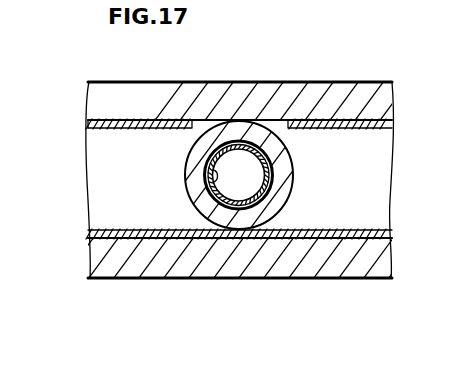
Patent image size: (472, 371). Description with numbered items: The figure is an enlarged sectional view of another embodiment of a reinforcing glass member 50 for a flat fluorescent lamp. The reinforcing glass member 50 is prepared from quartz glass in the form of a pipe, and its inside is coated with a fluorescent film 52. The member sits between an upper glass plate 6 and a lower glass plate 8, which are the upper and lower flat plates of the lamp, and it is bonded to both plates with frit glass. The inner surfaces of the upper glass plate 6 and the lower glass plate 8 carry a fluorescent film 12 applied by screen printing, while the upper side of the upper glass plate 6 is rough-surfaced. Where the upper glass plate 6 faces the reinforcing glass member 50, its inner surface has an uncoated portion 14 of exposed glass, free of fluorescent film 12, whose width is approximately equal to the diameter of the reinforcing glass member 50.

The upper glass plate 6 is at (122, 102).
The lower glass plate 8 is at (110, 266).
The fluorescent film 12 is at (90, 127).
The uncoated portion 14 is at (280, 123).
The reinforcing glass member 50 is at (289, 173).
The fluorescent film 52 is at (216, 177).